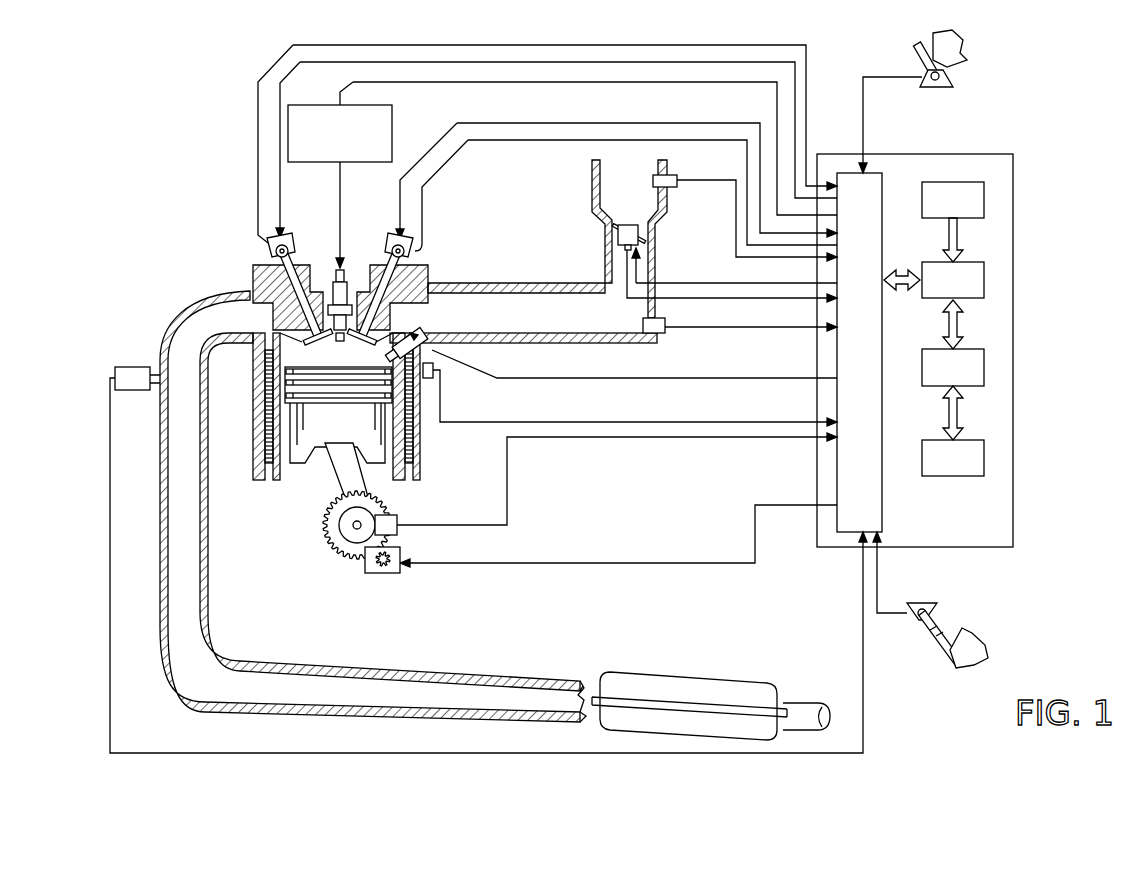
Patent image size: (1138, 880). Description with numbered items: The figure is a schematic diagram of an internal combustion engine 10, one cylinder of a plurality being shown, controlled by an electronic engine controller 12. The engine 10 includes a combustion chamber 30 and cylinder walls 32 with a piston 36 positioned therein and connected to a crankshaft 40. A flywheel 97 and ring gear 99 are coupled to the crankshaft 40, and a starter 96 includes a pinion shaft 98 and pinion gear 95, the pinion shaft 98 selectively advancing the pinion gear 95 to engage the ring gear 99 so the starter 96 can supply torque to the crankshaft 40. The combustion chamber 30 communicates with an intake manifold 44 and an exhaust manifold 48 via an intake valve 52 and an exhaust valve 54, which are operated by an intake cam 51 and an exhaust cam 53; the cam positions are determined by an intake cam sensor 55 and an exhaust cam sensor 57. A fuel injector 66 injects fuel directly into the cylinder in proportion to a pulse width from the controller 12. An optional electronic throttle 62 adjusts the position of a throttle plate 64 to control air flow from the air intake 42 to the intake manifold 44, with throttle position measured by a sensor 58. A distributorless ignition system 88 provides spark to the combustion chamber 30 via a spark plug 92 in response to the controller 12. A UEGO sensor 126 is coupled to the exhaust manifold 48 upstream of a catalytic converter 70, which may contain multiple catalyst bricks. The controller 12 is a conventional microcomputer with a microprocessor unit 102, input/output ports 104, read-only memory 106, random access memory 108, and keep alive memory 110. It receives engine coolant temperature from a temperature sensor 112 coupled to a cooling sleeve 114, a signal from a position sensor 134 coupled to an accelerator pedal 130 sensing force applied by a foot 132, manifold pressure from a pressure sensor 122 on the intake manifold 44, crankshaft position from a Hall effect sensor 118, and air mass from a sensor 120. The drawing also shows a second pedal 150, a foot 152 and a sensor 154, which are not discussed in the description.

The internal combustion engine 10 is at (198, 226).
The electronic engine controller 12 is at (1010, 154).
The combustion chamber 30 is at (338, 350).
The cylinder walls 32 is at (292, 470).
The piston 36 is at (325, 440).
The crankshaft 40 is at (345, 548).
The air intake 42 is at (639, 201).
The intake manifold 44 is at (586, 326).
The exhaust manifold 48 is at (236, 331).
The intake cam 51 is at (388, 240).
The intake valve 52 is at (377, 320).
The exhaust cam 53 is at (292, 238).
The exhaust valve 54 is at (297, 320).
The intake cam sensor 55 is at (410, 257).
The exhaust cam sensor 57 is at (270, 258).
The throttle position sensor 58 is at (608, 250).
The electronic throttle 62 is at (646, 233).
The throttle plate 64 is at (612, 232).
The fuel injector 66 is at (428, 350).
The catalytic converter 70 is at (612, 672).
The distributorless ignition system 88 is at (302, 105).
The spark plug 92 is at (346, 272).
The pinion gear 95 is at (389, 574).
The starter 96 is at (400, 566).
The flywheel 97 is at (332, 535).
The pinion shaft 98 is at (377, 572).
The ring gear 99 is at (355, 562).
The microprocessor unit 102 is at (985, 280).
The input/output ports 104 is at (883, 177).
The read-only memory 106 is at (985, 195).
The random access memory 108 is at (985, 366).
The keep alive memory 110 is at (985, 456).
The temperature sensor 112 is at (433, 375).
The cooling sleeve 114 is at (413, 440).
The Hall effect sensor 118 is at (397, 516).
The air mass sensor 120 is at (668, 175).
The pressure sensor 122 is at (660, 333).
The Universal Exhaust Gas Oxygen sensor 126 is at (115, 372).
The accelerator pedal 130 is at (920, 50).
The foot 132 is at (963, 42).
The position sensor 134 is at (953, 80).
The brake pedal 150 is at (945, 652).
The foot 152 is at (975, 628).
The brake pedal position sensor 154 is at (910, 607).